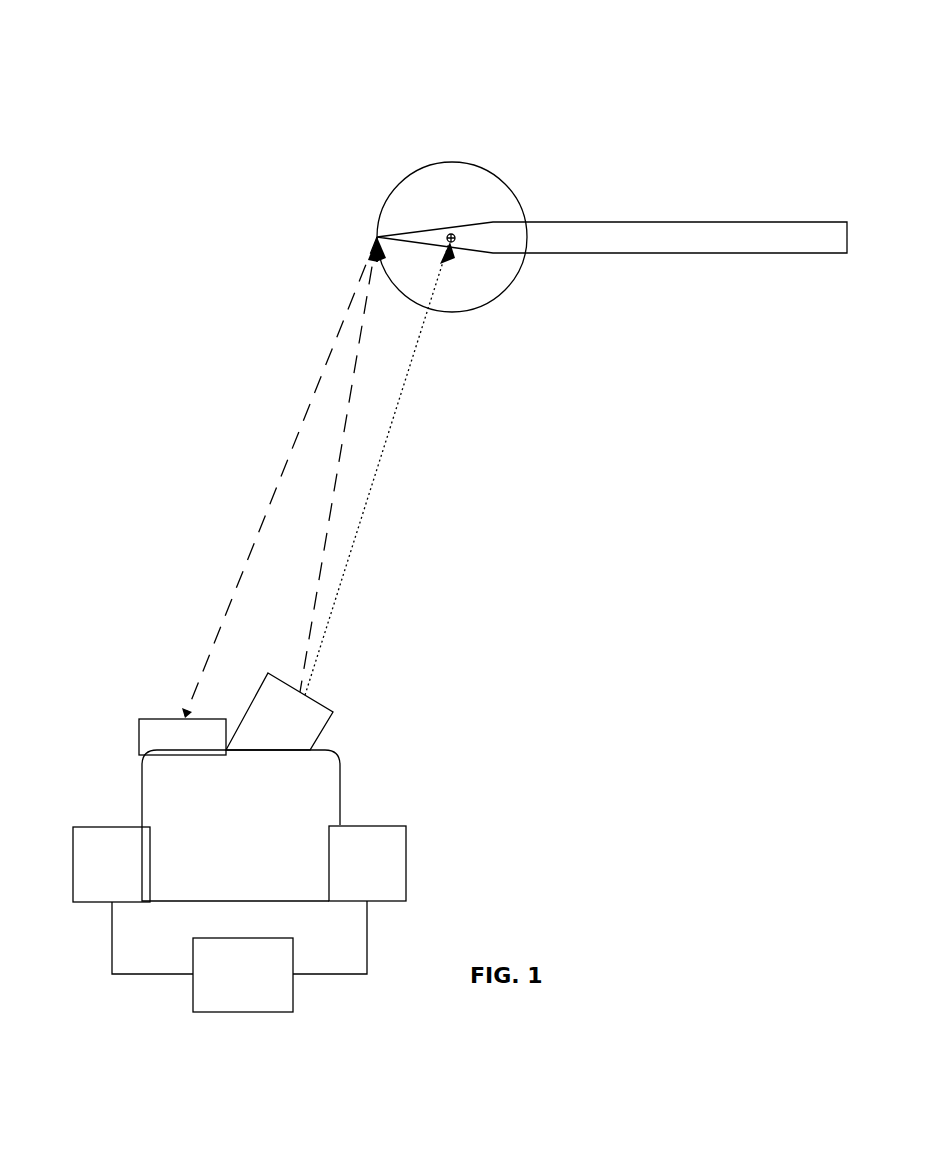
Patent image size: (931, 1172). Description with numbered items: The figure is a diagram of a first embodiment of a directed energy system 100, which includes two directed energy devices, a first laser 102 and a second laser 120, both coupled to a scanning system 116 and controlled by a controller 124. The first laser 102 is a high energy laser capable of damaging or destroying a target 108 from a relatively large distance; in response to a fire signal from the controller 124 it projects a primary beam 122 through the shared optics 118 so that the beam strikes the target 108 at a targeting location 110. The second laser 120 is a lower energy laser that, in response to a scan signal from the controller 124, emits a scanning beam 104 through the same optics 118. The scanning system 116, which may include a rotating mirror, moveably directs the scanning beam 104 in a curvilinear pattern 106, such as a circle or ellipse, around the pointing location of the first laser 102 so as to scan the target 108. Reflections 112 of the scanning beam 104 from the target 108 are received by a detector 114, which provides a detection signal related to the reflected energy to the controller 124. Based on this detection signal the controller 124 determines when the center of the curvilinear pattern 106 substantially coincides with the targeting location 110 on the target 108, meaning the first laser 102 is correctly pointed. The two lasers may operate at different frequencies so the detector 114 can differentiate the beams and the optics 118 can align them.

The directed energy system 100 is at (752, 34).
The first laser 102 is at (110, 826).
The scanning beam 104 is at (353, 380).
The curvilinear pattern 106 is at (425, 167).
The target 108 is at (583, 253).
The targeting location 110 is at (459, 231).
The reflections 112 is at (287, 465).
The detector 114 is at (180, 718).
The scanning system 116 is at (142, 760).
The optics 118 is at (333, 712).
The second laser 120 is at (368, 823).
The primary beam 122 is at (400, 398).
The controller 124 is at (243, 1012).